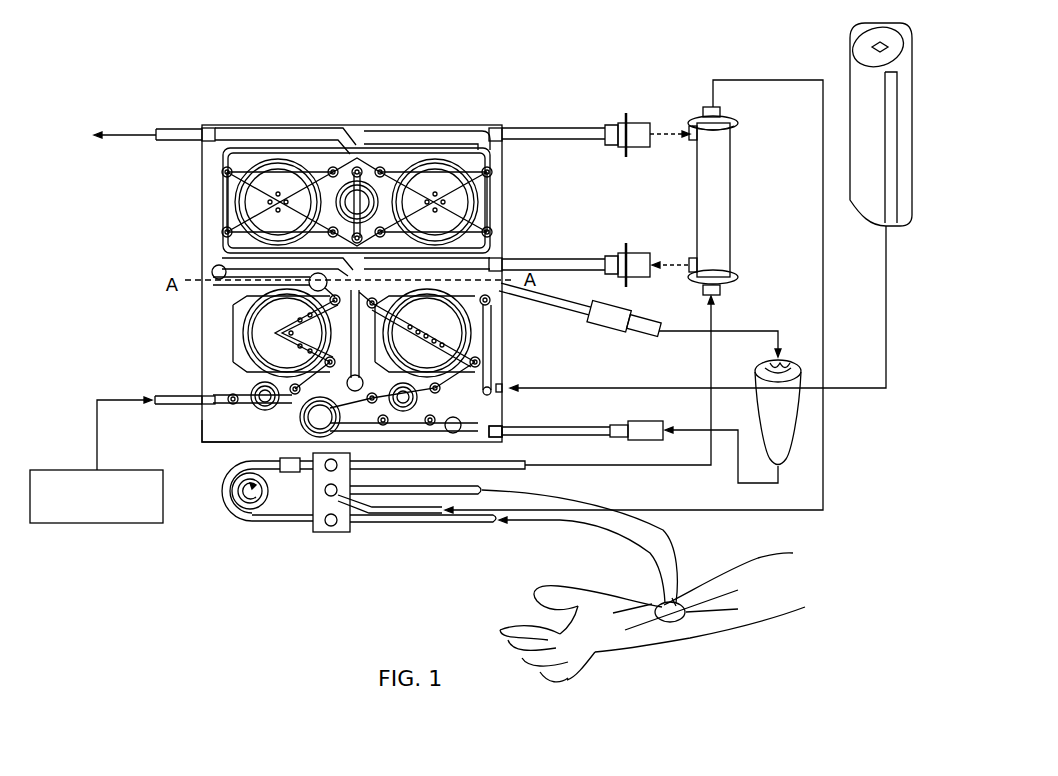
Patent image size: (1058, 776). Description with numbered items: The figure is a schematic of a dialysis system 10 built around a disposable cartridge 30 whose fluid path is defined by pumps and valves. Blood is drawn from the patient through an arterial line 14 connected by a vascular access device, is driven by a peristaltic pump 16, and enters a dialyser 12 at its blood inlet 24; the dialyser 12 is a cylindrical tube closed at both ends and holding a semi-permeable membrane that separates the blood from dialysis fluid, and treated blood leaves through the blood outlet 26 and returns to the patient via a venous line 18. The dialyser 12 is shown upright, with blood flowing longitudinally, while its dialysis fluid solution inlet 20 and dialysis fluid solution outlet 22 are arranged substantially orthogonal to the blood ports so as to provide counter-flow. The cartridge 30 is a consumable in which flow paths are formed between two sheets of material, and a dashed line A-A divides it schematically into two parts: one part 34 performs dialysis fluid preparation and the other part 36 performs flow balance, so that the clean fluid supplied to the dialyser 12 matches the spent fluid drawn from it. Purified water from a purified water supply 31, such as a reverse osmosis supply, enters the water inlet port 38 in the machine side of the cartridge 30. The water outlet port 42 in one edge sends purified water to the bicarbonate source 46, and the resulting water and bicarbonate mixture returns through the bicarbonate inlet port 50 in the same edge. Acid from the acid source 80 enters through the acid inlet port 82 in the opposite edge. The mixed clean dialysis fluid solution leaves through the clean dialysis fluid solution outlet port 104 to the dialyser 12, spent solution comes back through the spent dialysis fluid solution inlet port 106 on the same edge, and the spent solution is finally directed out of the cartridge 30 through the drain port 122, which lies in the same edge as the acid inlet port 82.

The dialysis system 10 is at (498, 124).
The dialyser 12 is at (725, 242).
The arterial line 14 is at (674, 468).
The peristaltic pump 16 is at (223, 500).
The venous line 18 is at (675, 552).
The dialysis fluid solution inlet 20 is at (690, 136).
The dialysis fluid solution outlet 22 is at (690, 262).
The blood inlet 24 is at (722, 292).
The blood outlet 26 is at (705, 108).
The cartridge 30 is at (200, 386).
The purified water supply 31 is at (905, 112).
The dialysis fluid preparation part of the cartridge 34 is at (207, 428).
The flow balance part of the cartridge 36 is at (210, 196).
The water inlet port 38 is at (505, 394).
The water outlet port 42 is at (510, 300).
The bicarbonate source 46 is at (790, 410).
The bicarbonate inlet port 50 is at (497, 443).
The acid source 80 is at (94, 512).
The acid inlet port 82 is at (200, 405).
The clean dialysis fluid solution outlet port 104 is at (510, 143).
The spent dialysis fluid solution inlet port 106 is at (505, 262).
The drain port 122 is at (200, 125).